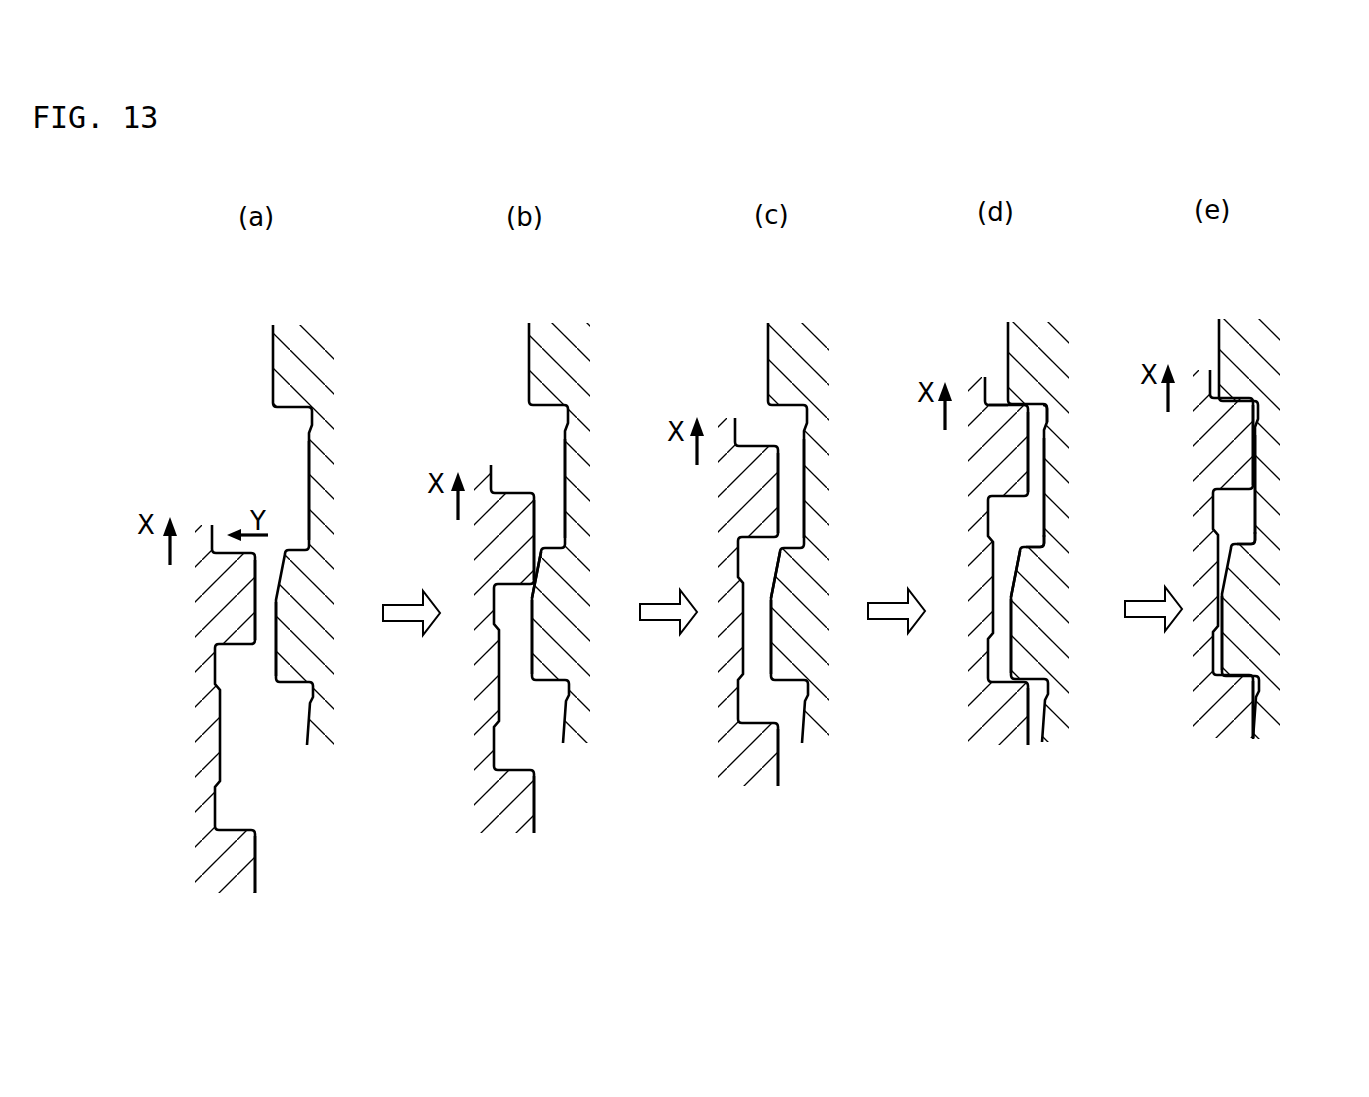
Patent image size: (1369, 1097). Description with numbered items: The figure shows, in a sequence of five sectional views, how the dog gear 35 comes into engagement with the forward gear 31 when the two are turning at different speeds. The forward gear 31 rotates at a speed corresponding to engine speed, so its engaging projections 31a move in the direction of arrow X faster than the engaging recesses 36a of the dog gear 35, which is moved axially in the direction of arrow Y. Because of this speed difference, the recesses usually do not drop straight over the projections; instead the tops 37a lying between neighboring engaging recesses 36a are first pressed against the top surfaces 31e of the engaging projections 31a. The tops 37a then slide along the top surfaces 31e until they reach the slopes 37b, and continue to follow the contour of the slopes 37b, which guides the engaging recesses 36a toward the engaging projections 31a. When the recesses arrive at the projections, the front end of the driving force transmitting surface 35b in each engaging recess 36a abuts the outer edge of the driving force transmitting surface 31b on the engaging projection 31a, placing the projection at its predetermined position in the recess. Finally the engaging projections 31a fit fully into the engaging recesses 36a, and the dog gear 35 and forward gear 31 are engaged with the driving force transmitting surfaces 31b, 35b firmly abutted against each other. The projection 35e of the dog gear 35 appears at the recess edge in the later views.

The dog gear 35 is at (273, 350).
The driving force transmitting surface 35b is at (1043, 412).
The die projection 35e is at (1043, 535).
The engaging recess 36a is at (309, 441).
The top 37a is at (275, 653).
The slope 37b is at (533, 600).
The forward gear 31 is at (264, 873).
The engaging projection 31a is at (257, 570).
The driving force transmitting surface 31b is at (1008, 405).
The top surface 31e is at (257, 607).